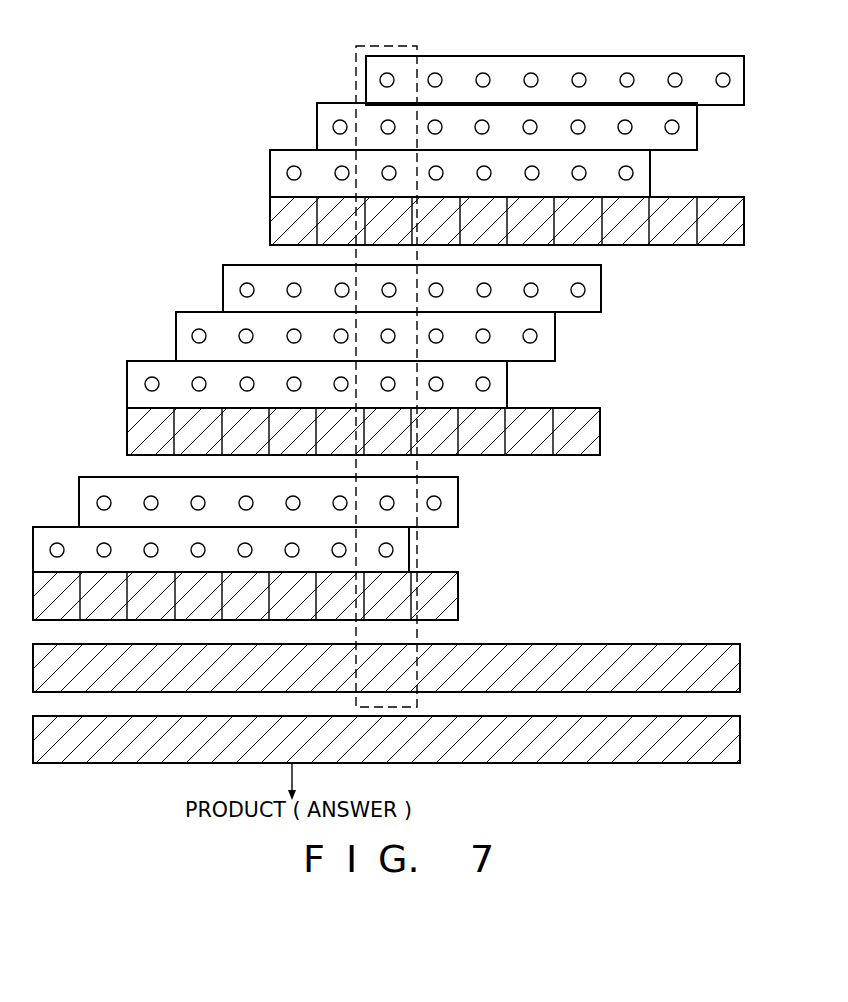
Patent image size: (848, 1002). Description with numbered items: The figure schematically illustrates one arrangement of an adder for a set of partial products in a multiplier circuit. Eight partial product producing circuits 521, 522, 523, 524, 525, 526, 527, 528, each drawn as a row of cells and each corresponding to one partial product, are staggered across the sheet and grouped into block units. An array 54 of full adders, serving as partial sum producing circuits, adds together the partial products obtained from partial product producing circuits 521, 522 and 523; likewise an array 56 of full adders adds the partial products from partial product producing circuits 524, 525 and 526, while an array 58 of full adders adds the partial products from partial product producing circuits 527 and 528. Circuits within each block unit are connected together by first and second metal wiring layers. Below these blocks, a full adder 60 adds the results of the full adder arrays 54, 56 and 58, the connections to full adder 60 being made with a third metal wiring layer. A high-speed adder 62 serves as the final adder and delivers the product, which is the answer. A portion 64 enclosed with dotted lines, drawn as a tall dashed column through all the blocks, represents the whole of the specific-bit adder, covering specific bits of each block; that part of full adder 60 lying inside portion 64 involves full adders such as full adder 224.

The partial product producing circuit 521 is at (690, 56).
The partial product producing circuit 522 is at (698, 131).
The partial product producing circuit 523 is at (651, 178).
The partial product producing circuit 524 is at (602, 288).
The partial product producing circuit 525 is at (556, 338).
The partial product producing circuit 526 is at (508, 388).
The partial product producing circuit 527 is at (459, 505).
The partial product producing circuit 528 is at (410, 550).
The array of full adders 54 is at (717, 246).
The array of full adders 56 is at (601, 433).
The array of full adders 58 is at (459, 598).
The full adder 60 is at (692, 648).
The high-speed adder 62 is at (693, 765).
The portion enclosed with dotted lines 64 is at (431, 401).
The full adder 224 is at (401, 683).